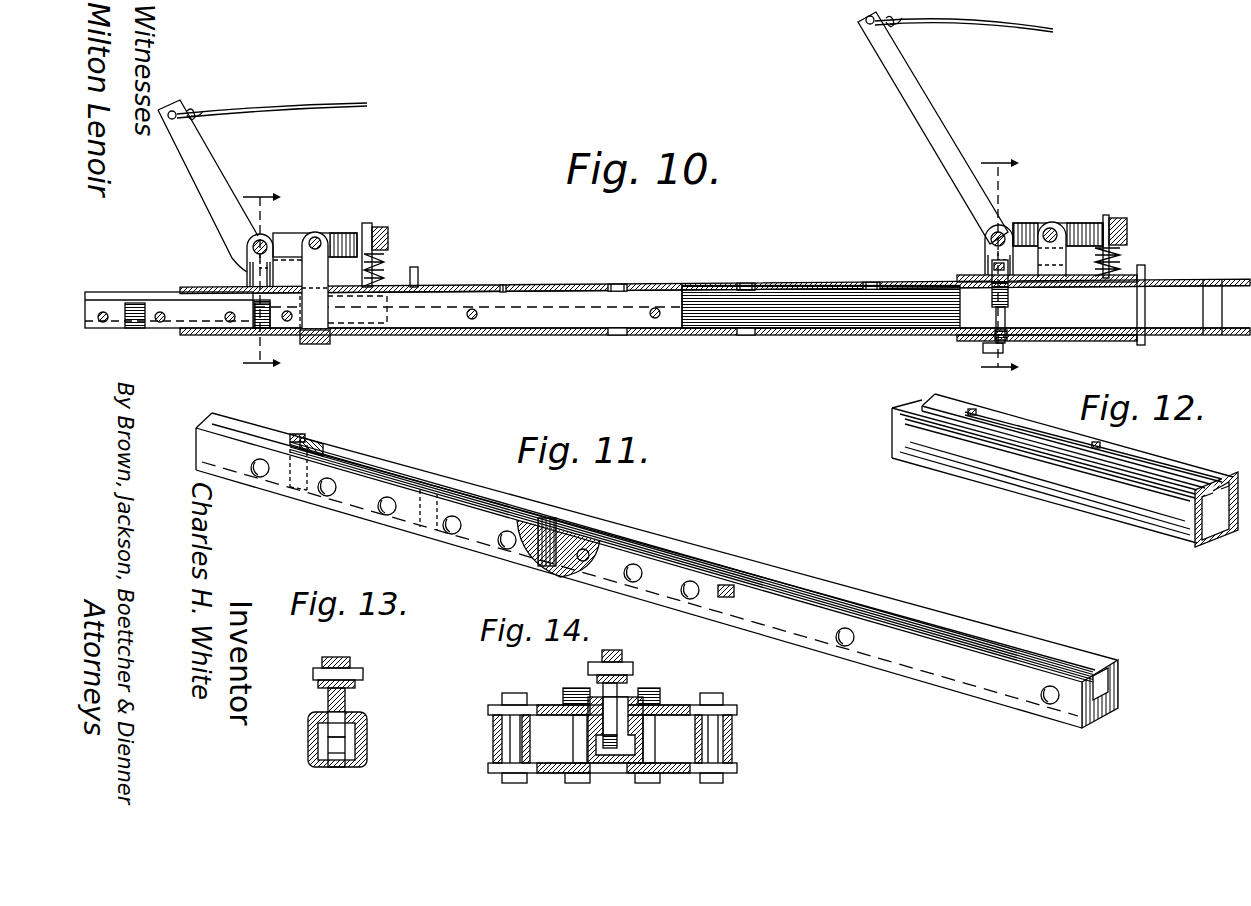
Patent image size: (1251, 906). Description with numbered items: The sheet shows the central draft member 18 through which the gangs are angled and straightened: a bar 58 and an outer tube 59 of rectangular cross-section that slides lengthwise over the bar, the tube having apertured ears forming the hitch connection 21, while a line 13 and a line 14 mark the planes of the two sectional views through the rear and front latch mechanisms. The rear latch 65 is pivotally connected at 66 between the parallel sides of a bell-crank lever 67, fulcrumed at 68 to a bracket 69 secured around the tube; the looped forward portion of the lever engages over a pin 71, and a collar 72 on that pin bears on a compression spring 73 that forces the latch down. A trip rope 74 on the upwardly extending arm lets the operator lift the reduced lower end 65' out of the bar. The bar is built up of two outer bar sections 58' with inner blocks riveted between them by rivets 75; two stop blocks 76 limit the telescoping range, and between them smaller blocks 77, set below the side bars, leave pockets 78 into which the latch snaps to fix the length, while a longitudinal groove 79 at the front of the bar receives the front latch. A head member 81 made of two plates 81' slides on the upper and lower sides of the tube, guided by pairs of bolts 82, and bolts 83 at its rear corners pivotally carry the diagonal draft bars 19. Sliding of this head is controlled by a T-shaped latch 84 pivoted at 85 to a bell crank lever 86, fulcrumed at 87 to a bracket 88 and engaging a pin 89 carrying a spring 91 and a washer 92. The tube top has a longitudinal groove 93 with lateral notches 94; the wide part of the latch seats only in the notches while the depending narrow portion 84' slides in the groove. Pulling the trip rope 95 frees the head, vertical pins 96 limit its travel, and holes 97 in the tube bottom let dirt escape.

In FIG. 10, the line 13— 13 is at (262, 280).
In FIG. 10, the line 14— 14 is at (1000, 265).
In FIG. 10, the central draft member 18 is at (672, 270).
In FIG. 14, the diagonal draft bars 19 is at (493, 740).
In FIG. 10, the hitch connection 21 is at (1204, 292).
In FIG. 10, the bar 58 is at (667, 326).
In FIG. 11, the bar 58 is at (657, 570).
In FIG. 13, the bar 58 is at (340, 733).
In FIG. 11, the outer bar sections 58' is at (837, 577).
In FIG. 10, the outer tube 59 is at (657, 336).
In FIG. 12, the outer tube 59 is at (892, 455).
In FIG. 13, the outer tube 59 is at (360, 762).
In FIG. 14, the outer tube 59 is at (640, 755).
In FIG. 10, the latch 65 is at (236, 260).
In FIG. 13, the latch 65 is at (308, 700).
In FIG. 10, the reduced lower end 65' is at (233, 331).
In FIG. 13, the reduced lower end 65' is at (307, 732).
In FIG. 10, the pivotal connection 66 is at (265, 241).
In FIG. 13, the pivotal connection 66 is at (313, 676).
In FIG. 10, the bell-crank lever 67 is at (218, 215).
In FIG. 13, the bell-crank lever 67 is at (338, 649).
In FIG. 10, the fulcrum 68 is at (316, 236).
In FIG. 10, the bracket 69 is at (318, 238).
In FIG. 10, the pin 71 is at (369, 228).
In FIG. 10, the collar 72 is at (388, 240).
In FIG. 10, the compression spring 73 is at (385, 265).
In FIG. 10, the trip rope 74 is at (368, 104).
In FIG. 11, the rivets 75 is at (260, 477).
In FIG. 10, the stop blocks 76 is at (312, 330).
In FIG. 11, the stop blocks 76 is at (297, 440).
In FIG. 10, the smaller blocks 77 is at (103, 312).
In FIG. 11, the smaller blocks 77 is at (450, 495).
In FIG. 10, the pockets 78 is at (135, 303).
In FIG. 11, the pockets 78 is at (325, 453).
In FIG. 10, the longitudinal groove 79 is at (560, 305).
In FIG. 11, the longitudinal groove 79 is at (1100, 680).
In FIG. 10, the head member 81 is at (1059, 216).
In FIG. 14, the head member 81 is at (611, 718).
In FIG. 10, the plates 81' is at (1018, 300).
In FIG. 14, the plates 81' is at (588, 740).
In FIG. 14, the bolts 82 is at (577, 690).
In FIG. 14, the bolts 83 is at (712, 697).
In FIG. 10, the latch 84 is at (976, 253).
In FIG. 14, the latch 84 is at (635, 697).
In FIG. 10, the depending narrow portion 84' is at (968, 317).
In FIG. 14, the depending narrow portion 84' is at (573, 748).
In FIG. 10, the pivotal connection 85 is at (1003, 234).
In FIG. 14, the pivotal connection 85 is at (630, 668).
In FIG. 10, the bell crank lever 86 is at (965, 215).
In FIG. 14, the bell crank lever 86 is at (616, 642).
In FIG. 10, the fulcrum 87 is at (1068, 228).
In FIG. 10, the bracket 88 is at (1053, 288).
In FIG. 10, the pin 89 is at (1108, 222).
In FIG. 10, the spring 91 is at (1122, 262).
In FIG. 10, the washer 92 is at (1128, 238).
In FIG. 10, the longitudinal groove 93 is at (798, 285).
In FIG. 12, the longitudinal groove 93 is at (1160, 470).
In FIG. 10, the notches 94 is at (618, 286).
In FIG. 12, the notches 94 is at (972, 416).
In FIG. 14, the notches 94 is at (575, 708).
In FIG. 10, the trip rope 95 is at (1054, 31).
In FIG. 10, the vertical pins 96 is at (419, 272).
In FIG. 10, the holes 97 is at (487, 336).
In FIG. 12, the holes 97 is at (1222, 538).